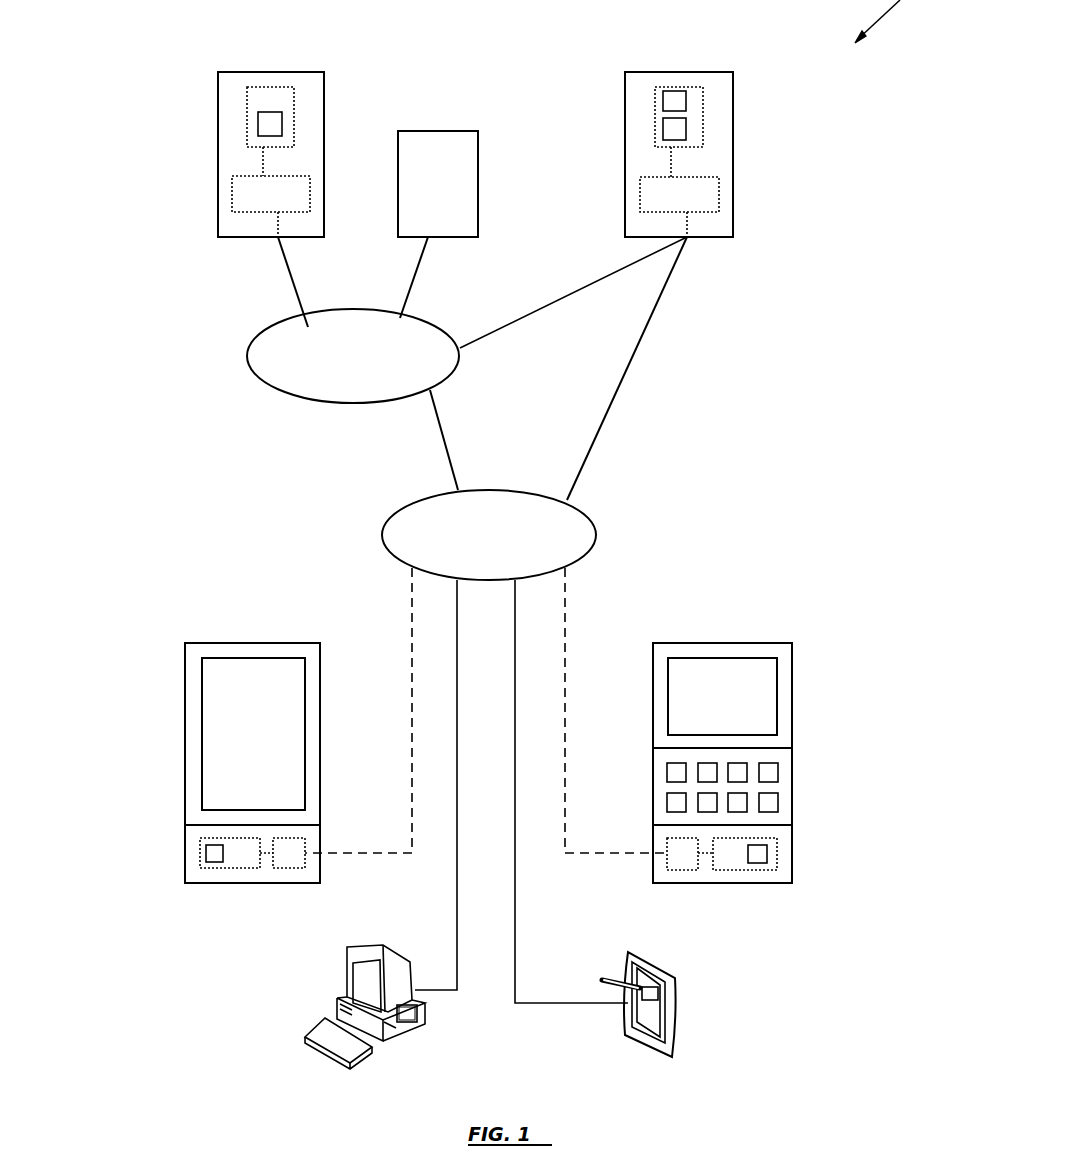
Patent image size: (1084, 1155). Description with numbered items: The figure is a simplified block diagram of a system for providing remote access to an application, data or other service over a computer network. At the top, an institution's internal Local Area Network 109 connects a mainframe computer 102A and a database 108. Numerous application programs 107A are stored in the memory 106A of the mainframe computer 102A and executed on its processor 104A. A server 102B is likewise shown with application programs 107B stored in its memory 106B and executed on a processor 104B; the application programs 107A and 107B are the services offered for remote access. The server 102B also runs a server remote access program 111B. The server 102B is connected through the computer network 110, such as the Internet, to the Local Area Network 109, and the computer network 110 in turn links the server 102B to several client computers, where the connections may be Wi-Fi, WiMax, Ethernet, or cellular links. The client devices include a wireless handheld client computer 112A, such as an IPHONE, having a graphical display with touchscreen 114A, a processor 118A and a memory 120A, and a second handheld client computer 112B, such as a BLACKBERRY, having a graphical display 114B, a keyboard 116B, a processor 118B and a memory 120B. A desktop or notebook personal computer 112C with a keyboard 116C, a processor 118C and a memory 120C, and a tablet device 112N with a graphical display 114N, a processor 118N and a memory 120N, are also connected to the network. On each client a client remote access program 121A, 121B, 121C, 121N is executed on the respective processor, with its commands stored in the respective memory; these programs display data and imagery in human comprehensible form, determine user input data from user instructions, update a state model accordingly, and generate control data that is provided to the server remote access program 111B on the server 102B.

The mainframe computer 102A is at (262, 71).
The processor 104A is at (262, 192).
The memory 106A is at (277, 103).
The application programs 107A is at (268, 128).
The database 108 is at (428, 178).
The server 102B is at (685, 70).
The processor 104B is at (688, 192).
The memory 106B is at (688, 103).
The application programs 107B is at (682, 132).
The server remote access program 111B is at (682, 103).
The Local Area Network (LAN) 109 is at (398, 342).
The computer network 110 is at (563, 537).
The client computer 112A is at (187, 678).
The graphical display with touchscreen 114A is at (245, 742).
The processor 118A is at (290, 860).
The memory 120A is at (230, 860).
The client remote access program 121A is at (213, 855).
The client computer 112B is at (777, 650).
The graphical display 114B is at (730, 695).
The keyboard 116B is at (760, 787).
The processor 118B is at (685, 858).
The memory 120B is at (745, 860).
The client remote access program 121B is at (757, 855).
The desktop/notebook personal computer 112C is at (347, 997).
The keyboard 116C is at (322, 1052).
The processor 118C is at (395, 1024).
The memory 120C is at (397, 1020).
The client remote access program 121C is at (405, 1015).
The tablet device 112N is at (672, 1000).
The graphical display 114N is at (645, 1020).
The processor 118N is at (673, 1040).
The memory 120N is at (668, 1028).
The client remote access program 121N is at (652, 995).